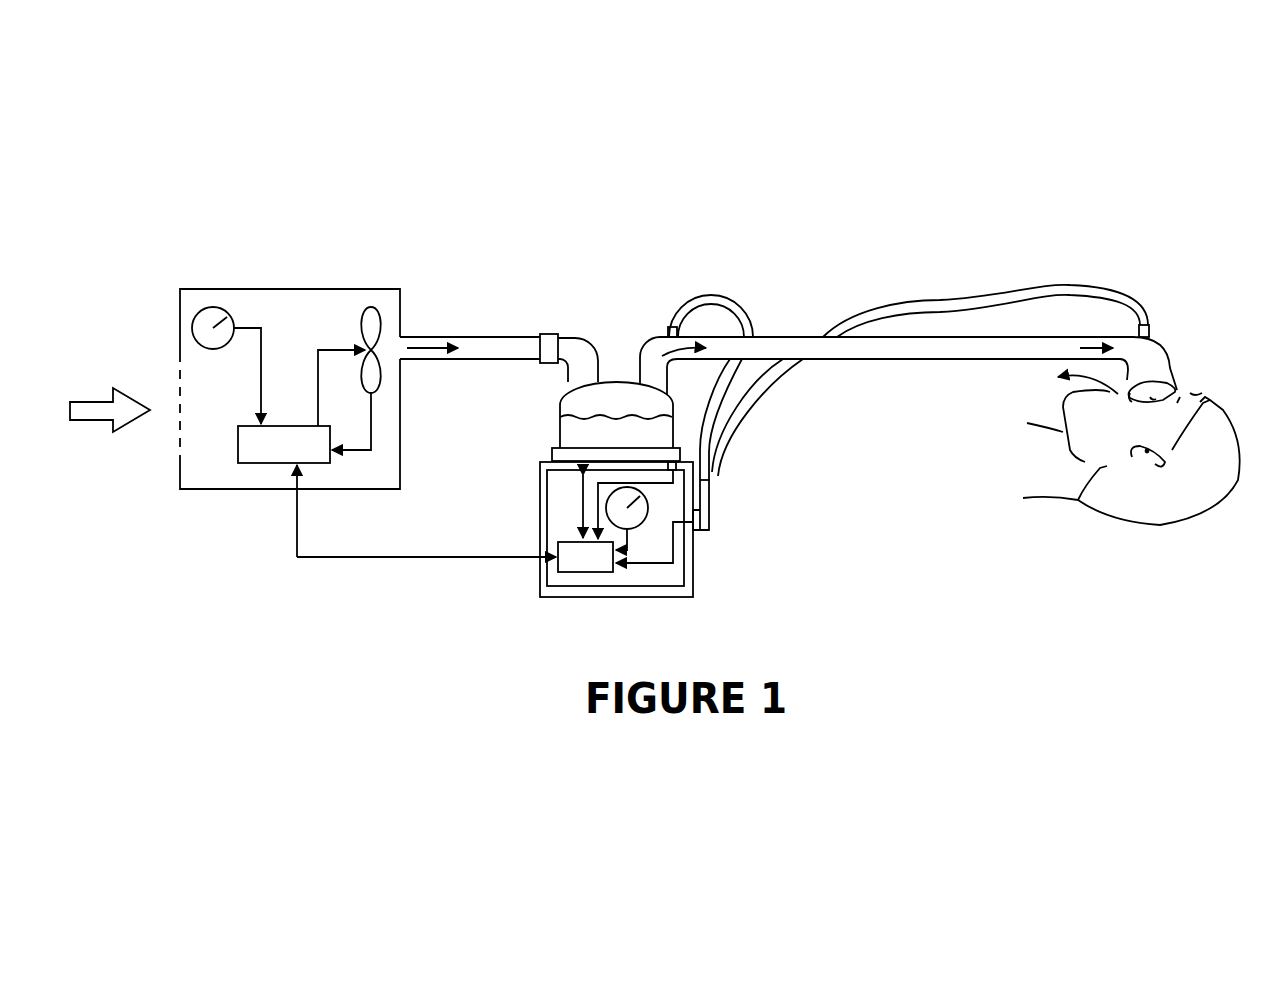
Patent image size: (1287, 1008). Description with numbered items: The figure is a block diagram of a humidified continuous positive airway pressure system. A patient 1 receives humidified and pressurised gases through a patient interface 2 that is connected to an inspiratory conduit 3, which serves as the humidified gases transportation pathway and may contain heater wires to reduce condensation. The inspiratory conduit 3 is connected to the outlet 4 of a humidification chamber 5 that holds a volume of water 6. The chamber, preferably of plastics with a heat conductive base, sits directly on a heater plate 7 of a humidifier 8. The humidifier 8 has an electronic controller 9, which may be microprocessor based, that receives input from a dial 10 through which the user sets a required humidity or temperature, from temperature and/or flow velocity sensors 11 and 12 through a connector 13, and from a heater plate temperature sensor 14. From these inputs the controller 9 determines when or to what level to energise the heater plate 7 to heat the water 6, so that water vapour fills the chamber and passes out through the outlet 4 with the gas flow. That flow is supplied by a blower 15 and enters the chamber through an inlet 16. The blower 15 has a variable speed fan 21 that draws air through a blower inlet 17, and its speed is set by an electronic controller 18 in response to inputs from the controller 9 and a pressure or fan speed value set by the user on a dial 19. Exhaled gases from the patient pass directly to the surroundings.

The patient 1 is at (1110, 517).
The patient interface 2 is at (1177, 383).
The inspiratory conduit 3 is at (918, 362).
The outlet 4 is at (640, 363).
The humidification chamber 5 is at (560, 406).
The water 6 is at (616, 430).
The heater plate 7 is at (552, 452).
The humidifier 8 is at (540, 517).
The electronic controller 9 is at (495, 521).
The dial 10 is at (640, 528).
The temperature and/or flow velocity sensor 11 is at (1153, 326).
The temperature and/or flow velocity sensor 12 is at (670, 327).
The connector 13 is at (712, 530).
The heater plate temperature sensor 14 is at (680, 468).
The blower 15 is at (288, 289).
The inlet 16 is at (568, 378).
The blower inlet 17 is at (175, 446).
The electronic controller 18 is at (252, 466).
The dial 19 is at (214, 307).
The variable speed fan 21 is at (370, 306).